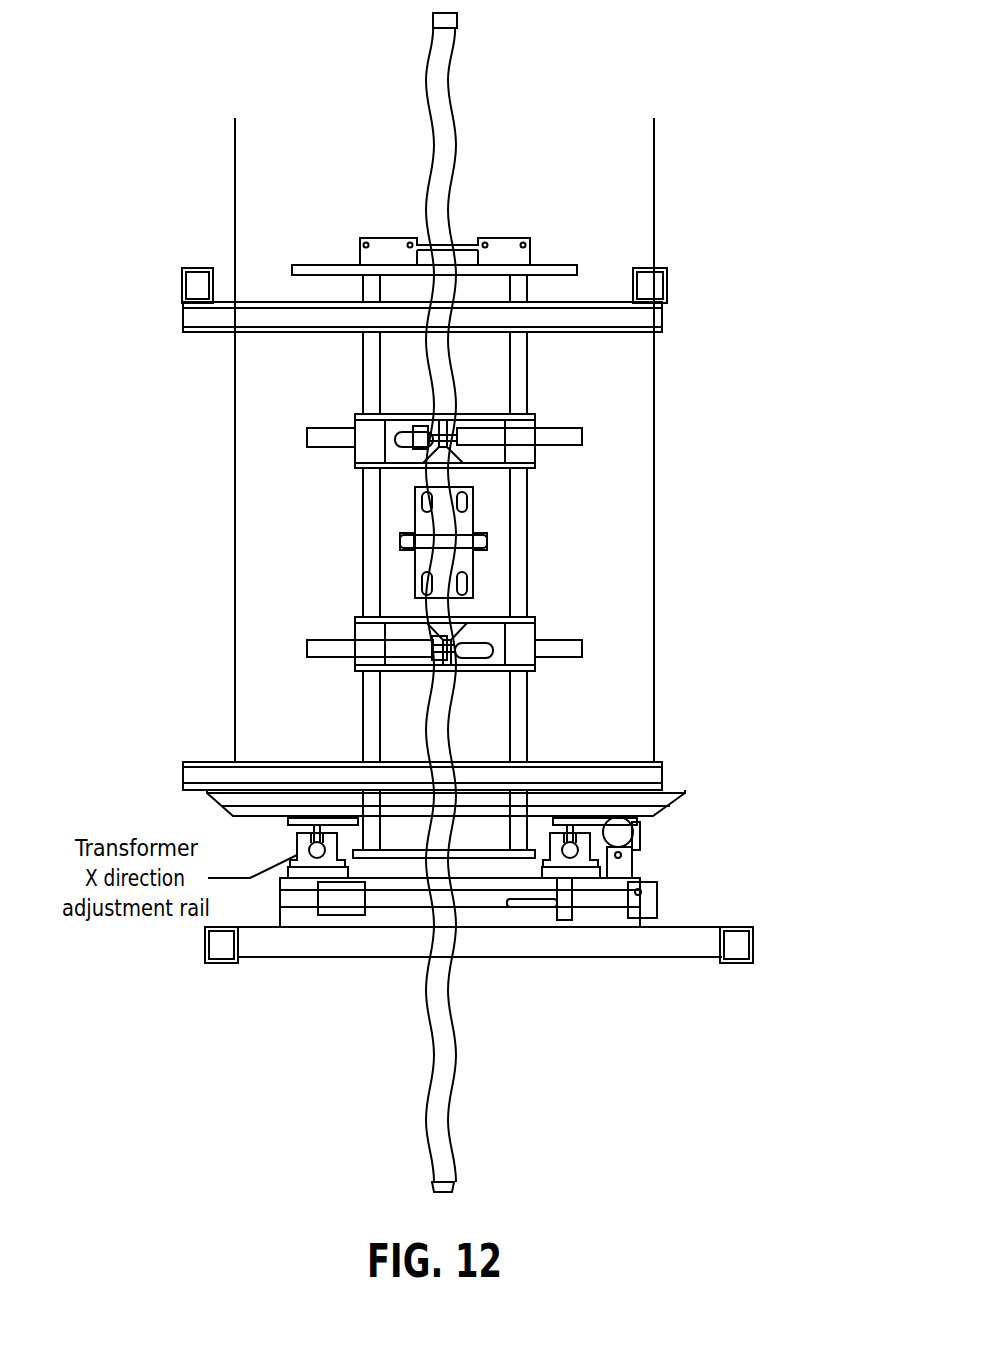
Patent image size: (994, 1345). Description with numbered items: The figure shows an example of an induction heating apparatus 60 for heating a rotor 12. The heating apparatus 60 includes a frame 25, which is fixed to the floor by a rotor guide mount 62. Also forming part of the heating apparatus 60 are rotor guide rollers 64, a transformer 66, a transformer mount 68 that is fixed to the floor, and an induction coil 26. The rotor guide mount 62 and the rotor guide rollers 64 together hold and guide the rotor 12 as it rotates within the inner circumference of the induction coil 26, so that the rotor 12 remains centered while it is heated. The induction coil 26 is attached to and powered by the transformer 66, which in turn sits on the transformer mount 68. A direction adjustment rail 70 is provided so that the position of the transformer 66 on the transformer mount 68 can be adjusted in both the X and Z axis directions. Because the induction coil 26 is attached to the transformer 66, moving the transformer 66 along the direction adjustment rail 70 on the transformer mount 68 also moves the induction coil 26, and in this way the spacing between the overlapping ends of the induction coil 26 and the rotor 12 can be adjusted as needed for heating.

The induction heating apparatus 60 is at (686, 120).
The rotor guide mount 62 is at (197, 290).
The frame 25 is at (522, 363).
The transformer 66 is at (235, 441).
The rotor guide rollers 64 is at (446, 456).
The induction coil 26 is at (393, 538).
The direction adjustment rail 70 is at (322, 846).
The transformer mount 68 is at (735, 945).
The rotor 12 is at (437, 1052).